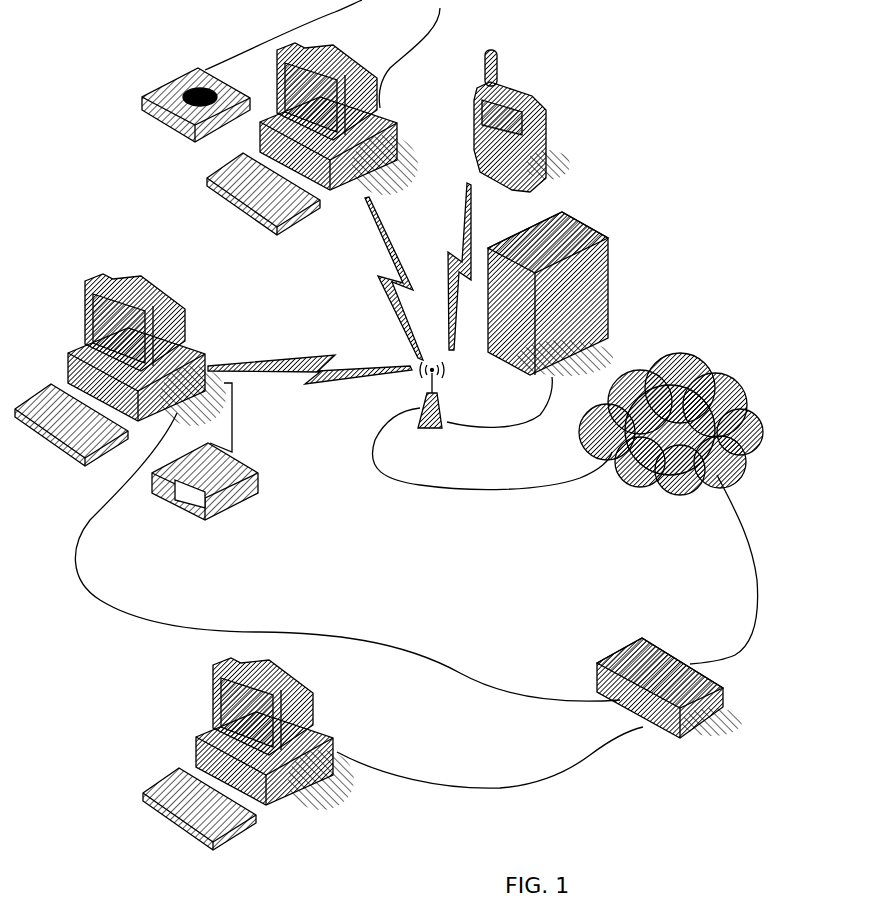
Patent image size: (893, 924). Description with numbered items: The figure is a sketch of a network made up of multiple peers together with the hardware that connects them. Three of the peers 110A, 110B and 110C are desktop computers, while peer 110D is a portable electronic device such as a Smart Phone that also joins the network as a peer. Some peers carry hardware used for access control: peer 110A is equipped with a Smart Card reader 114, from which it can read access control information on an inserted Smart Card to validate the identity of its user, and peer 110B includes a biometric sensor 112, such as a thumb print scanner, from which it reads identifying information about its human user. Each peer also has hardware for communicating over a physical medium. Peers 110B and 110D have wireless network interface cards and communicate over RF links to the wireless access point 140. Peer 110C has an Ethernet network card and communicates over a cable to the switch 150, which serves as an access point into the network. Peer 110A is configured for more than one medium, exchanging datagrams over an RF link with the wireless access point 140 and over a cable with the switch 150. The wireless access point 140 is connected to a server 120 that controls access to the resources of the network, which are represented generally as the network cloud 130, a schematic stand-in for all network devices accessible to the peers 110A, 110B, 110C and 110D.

The peer 110A is at (172, 305).
The peer 110B is at (345, 196).
The peer 110C is at (275, 803).
The peer 110D is at (547, 110).
The biometric sensor 112 is at (200, 68).
The Smart Card reader 114 is at (248, 500).
The server 120 is at (608, 270).
The network cloud 130 is at (752, 388).
The wireless access point 140 is at (436, 430).
The switch 150 is at (708, 738).